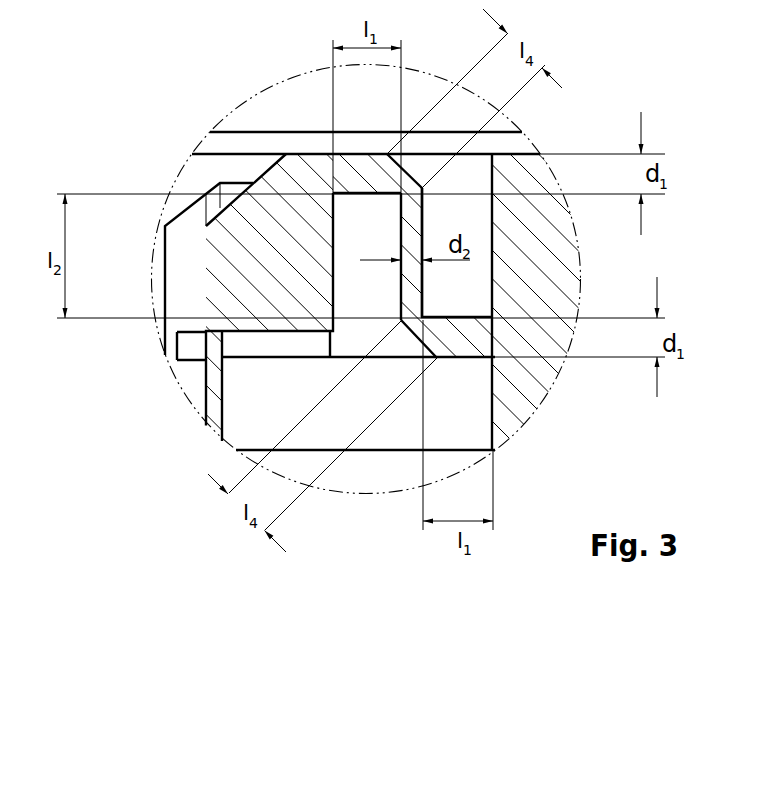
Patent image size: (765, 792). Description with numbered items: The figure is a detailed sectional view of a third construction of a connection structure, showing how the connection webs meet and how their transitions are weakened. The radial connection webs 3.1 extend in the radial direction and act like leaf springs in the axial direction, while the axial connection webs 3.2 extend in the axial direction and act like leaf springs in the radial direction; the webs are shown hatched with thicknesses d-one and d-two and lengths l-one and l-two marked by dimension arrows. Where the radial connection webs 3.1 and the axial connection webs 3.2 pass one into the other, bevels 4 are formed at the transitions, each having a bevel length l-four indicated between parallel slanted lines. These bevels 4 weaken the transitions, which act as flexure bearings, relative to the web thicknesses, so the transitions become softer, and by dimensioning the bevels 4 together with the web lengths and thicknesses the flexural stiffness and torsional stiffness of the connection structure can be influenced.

The radial connection web 3.1 is at (320, 132).
The axial connection web 3.2 is at (410, 245).
The bevel 4 is at (412, 178).